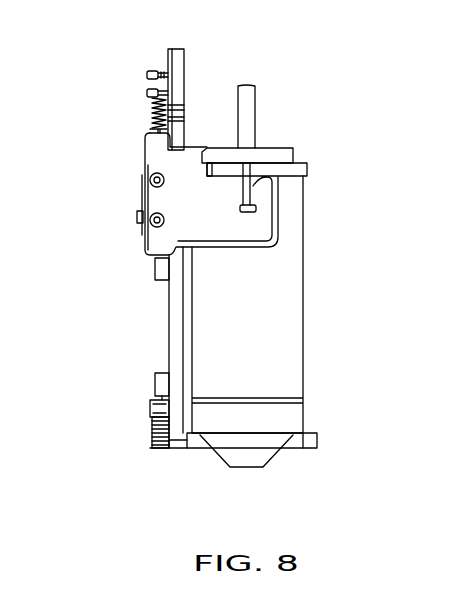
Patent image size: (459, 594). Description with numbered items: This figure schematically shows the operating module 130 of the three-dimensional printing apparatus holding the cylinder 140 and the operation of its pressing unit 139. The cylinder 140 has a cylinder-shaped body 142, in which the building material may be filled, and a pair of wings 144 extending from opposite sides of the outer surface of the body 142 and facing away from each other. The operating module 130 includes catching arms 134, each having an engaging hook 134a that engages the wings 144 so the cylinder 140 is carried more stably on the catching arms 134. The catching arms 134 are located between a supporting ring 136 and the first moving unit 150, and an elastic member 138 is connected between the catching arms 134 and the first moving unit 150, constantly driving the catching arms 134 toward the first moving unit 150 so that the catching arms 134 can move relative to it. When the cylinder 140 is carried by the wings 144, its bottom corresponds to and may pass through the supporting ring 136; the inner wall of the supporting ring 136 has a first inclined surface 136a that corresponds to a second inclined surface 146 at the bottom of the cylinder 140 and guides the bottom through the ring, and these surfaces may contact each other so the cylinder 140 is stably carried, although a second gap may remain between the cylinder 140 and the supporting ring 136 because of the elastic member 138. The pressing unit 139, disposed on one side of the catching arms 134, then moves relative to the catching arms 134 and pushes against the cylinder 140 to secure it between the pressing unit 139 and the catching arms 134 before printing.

The operating module 130 is at (116, 314).
The catching arms 134 is at (158, 138).
The engaging hook 134a is at (244, 203).
The supporting ring 136 is at (305, 440).
The first inclined surface 136a is at (272, 441).
The elastic member 138 is at (152, 108).
The pressing unit 139 is at (283, 158).
The cylinder 140 is at (326, 330).
The body 142 is at (284, 270).
The wings 144 is at (244, 203).
The second inclined surface 146 is at (292, 445).
The first moving unit 150 is at (178, 72).